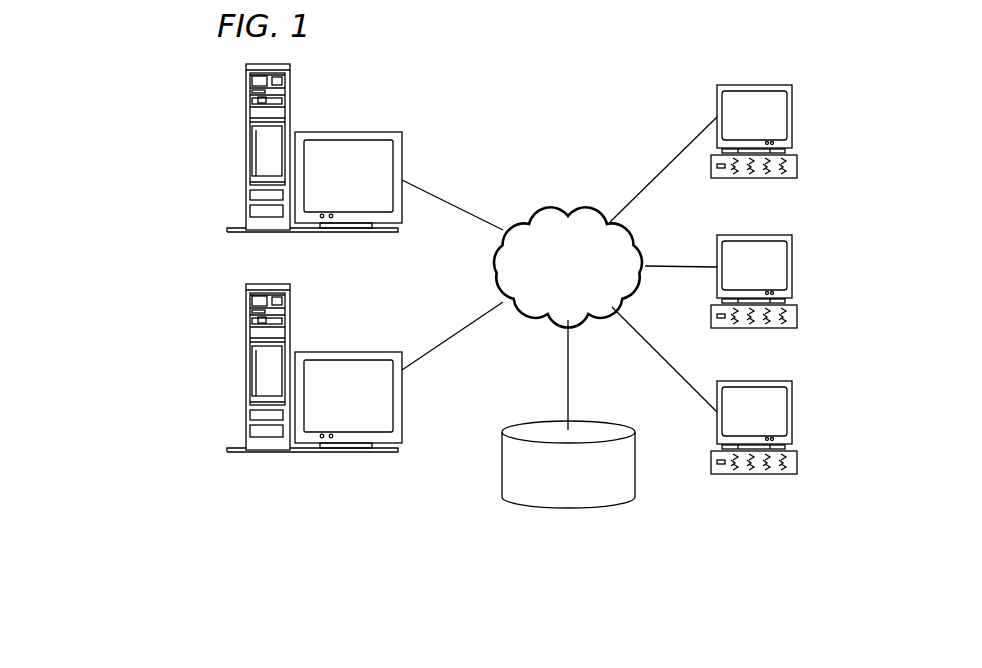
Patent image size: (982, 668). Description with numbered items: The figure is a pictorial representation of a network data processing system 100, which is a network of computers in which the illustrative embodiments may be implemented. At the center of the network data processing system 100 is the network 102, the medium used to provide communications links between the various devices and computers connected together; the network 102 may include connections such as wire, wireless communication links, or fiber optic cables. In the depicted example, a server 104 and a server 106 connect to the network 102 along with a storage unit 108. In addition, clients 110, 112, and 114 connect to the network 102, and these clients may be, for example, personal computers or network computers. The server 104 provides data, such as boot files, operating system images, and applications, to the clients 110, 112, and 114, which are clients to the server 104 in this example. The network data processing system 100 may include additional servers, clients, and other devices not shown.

The network data processing system 100 is at (617, 99).
The network 102 is at (538, 211).
The server 104 is at (245, 149).
The server 106 is at (245, 371).
The storage unit 108 is at (550, 508).
The client 110 is at (793, 117).
The client 112 is at (793, 267).
The client 114 is at (793, 413).